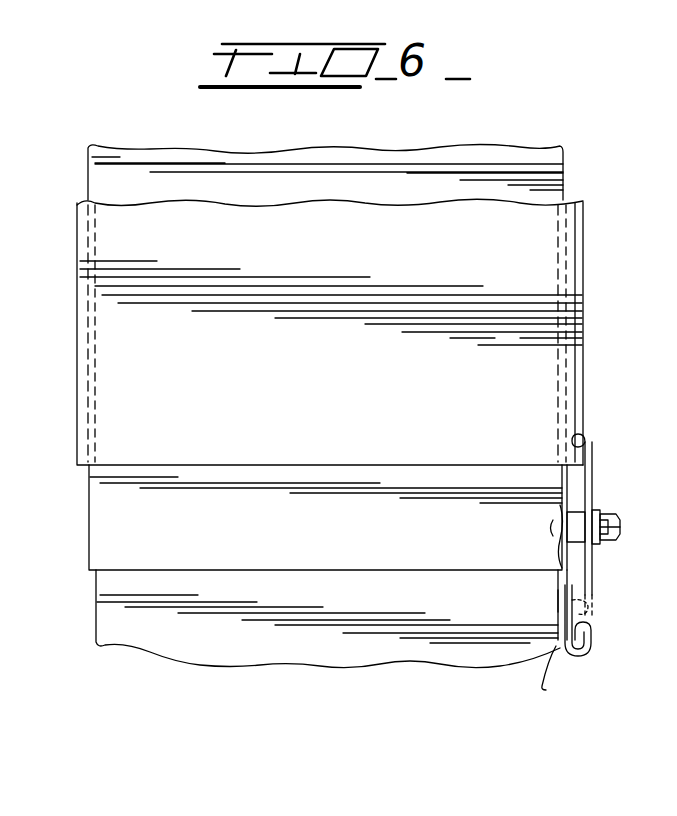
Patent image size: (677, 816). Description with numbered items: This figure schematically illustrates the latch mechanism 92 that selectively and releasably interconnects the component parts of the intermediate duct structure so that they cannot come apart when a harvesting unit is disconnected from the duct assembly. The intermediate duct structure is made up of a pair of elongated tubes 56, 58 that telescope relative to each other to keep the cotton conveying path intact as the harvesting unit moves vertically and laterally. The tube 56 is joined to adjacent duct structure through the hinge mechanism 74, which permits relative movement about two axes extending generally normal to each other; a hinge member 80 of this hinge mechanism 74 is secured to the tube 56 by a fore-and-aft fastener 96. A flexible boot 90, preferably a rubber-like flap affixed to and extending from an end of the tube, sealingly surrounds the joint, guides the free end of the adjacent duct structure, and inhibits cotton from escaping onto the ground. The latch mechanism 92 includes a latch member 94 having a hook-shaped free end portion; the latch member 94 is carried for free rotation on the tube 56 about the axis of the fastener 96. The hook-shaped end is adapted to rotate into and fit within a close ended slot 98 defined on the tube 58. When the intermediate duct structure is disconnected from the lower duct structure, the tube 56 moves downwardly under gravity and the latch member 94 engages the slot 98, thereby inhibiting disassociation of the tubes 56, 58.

The tube 58 is at (123, 366).
The tube 56 is at (110, 548).
The flexible boot 90 is at (285, 648).
The hinge member 80 is at (558, 532).
The hinge mechanism 74 is at (548, 598).
The latch member 94 is at (592, 472).
The close ended slot 98 is at (590, 437).
The latch mechanism 92 is at (620, 524).
The fore-and-aft fastener 96 is at (605, 543).